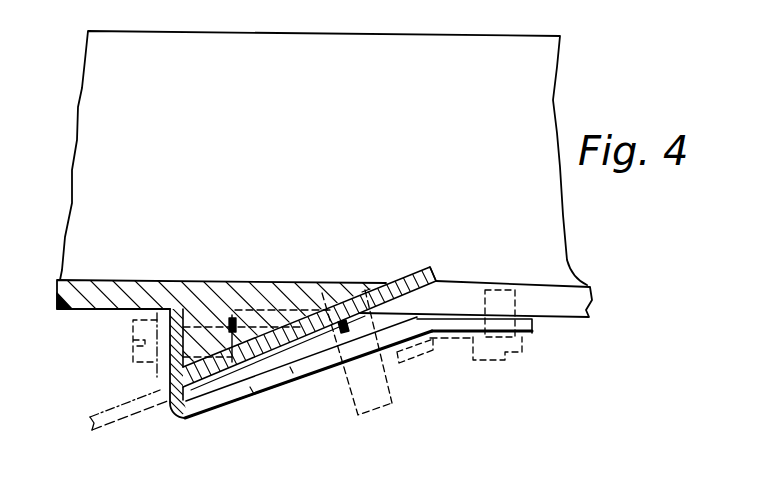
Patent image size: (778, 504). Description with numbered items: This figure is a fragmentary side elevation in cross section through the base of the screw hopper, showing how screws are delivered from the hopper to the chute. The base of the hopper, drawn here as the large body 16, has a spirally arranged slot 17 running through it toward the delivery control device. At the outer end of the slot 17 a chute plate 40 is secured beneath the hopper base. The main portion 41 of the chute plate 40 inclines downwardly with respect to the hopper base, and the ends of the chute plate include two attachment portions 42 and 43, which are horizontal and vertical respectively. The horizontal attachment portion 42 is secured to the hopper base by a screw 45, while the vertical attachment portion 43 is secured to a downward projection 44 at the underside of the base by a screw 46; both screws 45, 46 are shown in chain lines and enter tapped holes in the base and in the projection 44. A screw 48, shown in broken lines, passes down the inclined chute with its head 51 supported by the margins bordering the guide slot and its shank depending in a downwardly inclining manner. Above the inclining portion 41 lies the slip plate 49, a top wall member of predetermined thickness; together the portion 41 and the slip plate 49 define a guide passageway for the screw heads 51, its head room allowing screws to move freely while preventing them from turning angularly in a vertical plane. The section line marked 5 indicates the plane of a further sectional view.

The frame body 16 is at (513, 60).
The spirally arranged slot 17 is at (563, 303).
The chute plate 40 is at (427, 323).
The main portion of the chute plate 41 is at (307, 372).
The horizontal attachment portion 42 is at (537, 325).
The vertical attachment portion 43 is at (170, 378).
The downward projection 44 is at (229, 325).
The screw 45 is at (522, 363).
The screw 46 is at (131, 333).
The screw 48 is at (343, 387).
The slip plate 49 is at (428, 264).
The screw head 51 is at (366, 289).
The section line 5- 5 is at (185, 263).